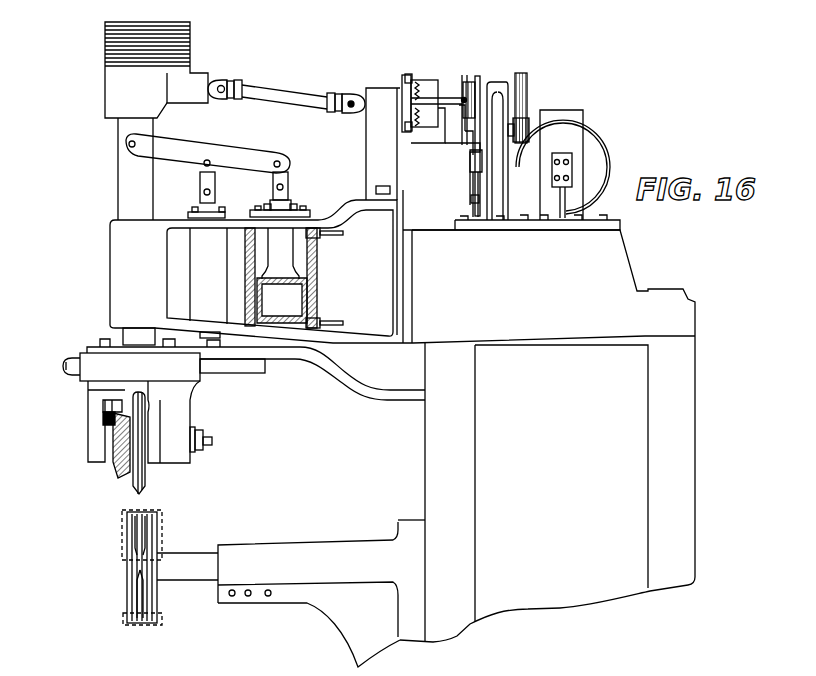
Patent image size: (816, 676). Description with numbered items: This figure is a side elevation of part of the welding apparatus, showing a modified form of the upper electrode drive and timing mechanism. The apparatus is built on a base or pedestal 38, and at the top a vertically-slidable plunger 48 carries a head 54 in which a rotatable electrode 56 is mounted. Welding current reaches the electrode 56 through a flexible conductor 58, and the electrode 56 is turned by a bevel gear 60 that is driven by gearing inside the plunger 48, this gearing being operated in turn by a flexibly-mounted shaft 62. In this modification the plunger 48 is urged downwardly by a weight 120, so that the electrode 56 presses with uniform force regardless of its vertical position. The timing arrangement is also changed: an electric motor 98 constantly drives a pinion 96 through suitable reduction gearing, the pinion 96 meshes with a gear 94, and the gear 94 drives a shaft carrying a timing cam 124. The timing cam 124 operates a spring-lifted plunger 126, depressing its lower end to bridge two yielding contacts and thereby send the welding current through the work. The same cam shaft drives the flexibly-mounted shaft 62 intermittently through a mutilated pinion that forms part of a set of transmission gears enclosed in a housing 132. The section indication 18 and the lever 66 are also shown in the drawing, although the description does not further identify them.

The section line 18 is at (423, 43).
The base or pedestal 38 is at (617, 459).
The plunger 48 is at (132, 175).
The head 54 is at (170, 368).
The rotatable electrode 56 is at (130, 478).
The flexible conductor 58 is at (347, 375).
The bevel gear 60 is at (103, 418).
The flexibly-mounted shaft 62 is at (278, 93).
The lever 66 is at (118, 572).
The gear 94 is at (527, 83).
The pinion 96 is at (530, 128).
The electric motor 98 is at (588, 158).
The weight 120 is at (185, 39).
The timing cam 124 is at (480, 82).
The spring-lifted plunger 126 is at (472, 205).
The housing 132 is at (380, 90).